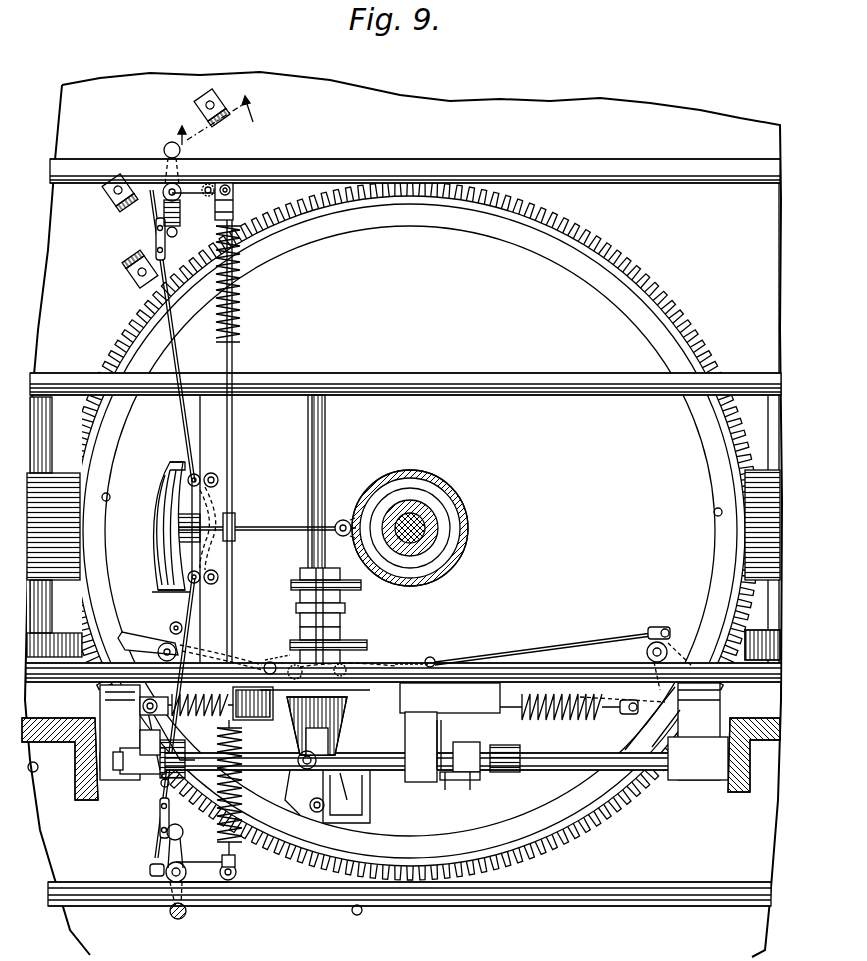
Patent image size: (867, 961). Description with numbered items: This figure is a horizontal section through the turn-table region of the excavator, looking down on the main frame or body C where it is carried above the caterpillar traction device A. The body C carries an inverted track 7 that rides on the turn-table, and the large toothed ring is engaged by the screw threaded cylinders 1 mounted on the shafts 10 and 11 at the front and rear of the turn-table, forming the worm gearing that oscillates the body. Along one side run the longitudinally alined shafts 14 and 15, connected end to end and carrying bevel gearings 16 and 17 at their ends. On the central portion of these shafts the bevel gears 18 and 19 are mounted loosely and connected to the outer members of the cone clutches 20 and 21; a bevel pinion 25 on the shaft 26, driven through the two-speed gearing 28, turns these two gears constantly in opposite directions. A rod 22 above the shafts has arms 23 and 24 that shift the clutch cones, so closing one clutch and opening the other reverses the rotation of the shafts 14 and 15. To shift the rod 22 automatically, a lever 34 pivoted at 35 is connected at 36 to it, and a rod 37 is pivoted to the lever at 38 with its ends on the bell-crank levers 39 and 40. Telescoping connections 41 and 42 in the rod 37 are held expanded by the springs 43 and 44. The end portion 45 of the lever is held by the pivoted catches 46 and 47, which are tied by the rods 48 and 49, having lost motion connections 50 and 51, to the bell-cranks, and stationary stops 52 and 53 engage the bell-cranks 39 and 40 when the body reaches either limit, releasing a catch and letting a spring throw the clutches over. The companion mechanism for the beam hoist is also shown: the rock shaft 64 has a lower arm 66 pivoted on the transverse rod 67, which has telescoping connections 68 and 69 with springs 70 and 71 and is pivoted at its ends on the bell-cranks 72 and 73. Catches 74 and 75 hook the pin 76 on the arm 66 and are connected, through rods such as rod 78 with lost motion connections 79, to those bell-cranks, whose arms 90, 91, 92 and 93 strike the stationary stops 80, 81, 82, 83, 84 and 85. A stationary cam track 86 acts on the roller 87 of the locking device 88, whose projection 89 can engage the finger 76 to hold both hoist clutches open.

The screw threaded cylinder 1 is at (76, 553).
The inverted track 7 is at (186, 360).
The shaft 10 is at (773, 600).
The shaft 11 is at (53, 432).
The longitudinally alined shaft 14 is at (178, 742).
The longitudinally alined shaft 15 is at (553, 770).
The bevel gearing 16 is at (74, 750).
The bevel gearing 17 is at (742, 787).
The bevel gear 18 is at (305, 815).
The bevel gear 19 is at (355, 790).
The cone clutch 20 is at (246, 720).
The cone clutch 21 is at (441, 730).
The rod 22 is at (483, 745).
The arm 23 is at (148, 745).
The arm 24 is at (470, 780).
The bevel pinion 25 is at (350, 720).
The shaft 26 is at (320, 465).
The two-speed gearing 28 is at (330, 598).
The lever 34 is at (362, 810).
The pivot 35 is at (322, 812).
The connection 36 is at (345, 753).
The rod 37 is at (450, 698).
The pivotal connection 38 is at (335, 673).
The bell-crank lever 39 is at (160, 640).
The bell-crank lever 40 is at (647, 660).
The telescoping connection 41 is at (206, 694).
The telescoping connection 42 is at (583, 694).
The spring 43 is at (165, 702).
The spring 44 is at (569, 719).
The end portion 45 is at (302, 673).
The pivoted catch 46 is at (283, 652).
The pivoted catch 47 is at (366, 666).
The rod 48 is at (268, 660).
The rod 49 is at (538, 655).
The lost motion connection 50 is at (246, 652).
The lost motion connection 51 is at (412, 664).
The stationary stop 52 is at (111, 497).
The stationary stop 53 is at (713, 511).
The rock shaft 64 is at (344, 520).
The arm 66 is at (245, 527).
The rod 67 is at (233, 367).
The telescoping connection 68 is at (245, 275).
The telescoping connection 69 is at (167, 790).
The spring 70 is at (218, 239).
The spring 71 is at (216, 816).
The bell-crank 72 is at (205, 182).
The bell-crank 73 is at (197, 865).
The pivoted catch 74 is at (190, 497).
The pivoted catch 75 is at (195, 562).
The pin 76 is at (228, 515).
The rod 78 is at (165, 783).
The lost motion connection 79 is at (156, 237).
The stationary stop 80 is at (38, 770).
The stationary stop 81 is at (357, 915).
The stationary stop 82 is at (118, 198).
The stationary stop 83 is at (205, 105).
The stationary stop 84 is at (128, 278).
The stationary stop 85 is at (210, 197).
The stationary cam track 86 is at (172, 468).
The roller 87 is at (156, 527).
The locking device 88 is at (178, 540).
The projection 89 is at (220, 500).
The arm 90 is at (171, 146).
The arm 91 is at (174, 238).
The arm 92 is at (170, 838).
The arm 93 is at (184, 913).
The traction device A is at (425, 530).
The main frame or body C is at (606, 900).